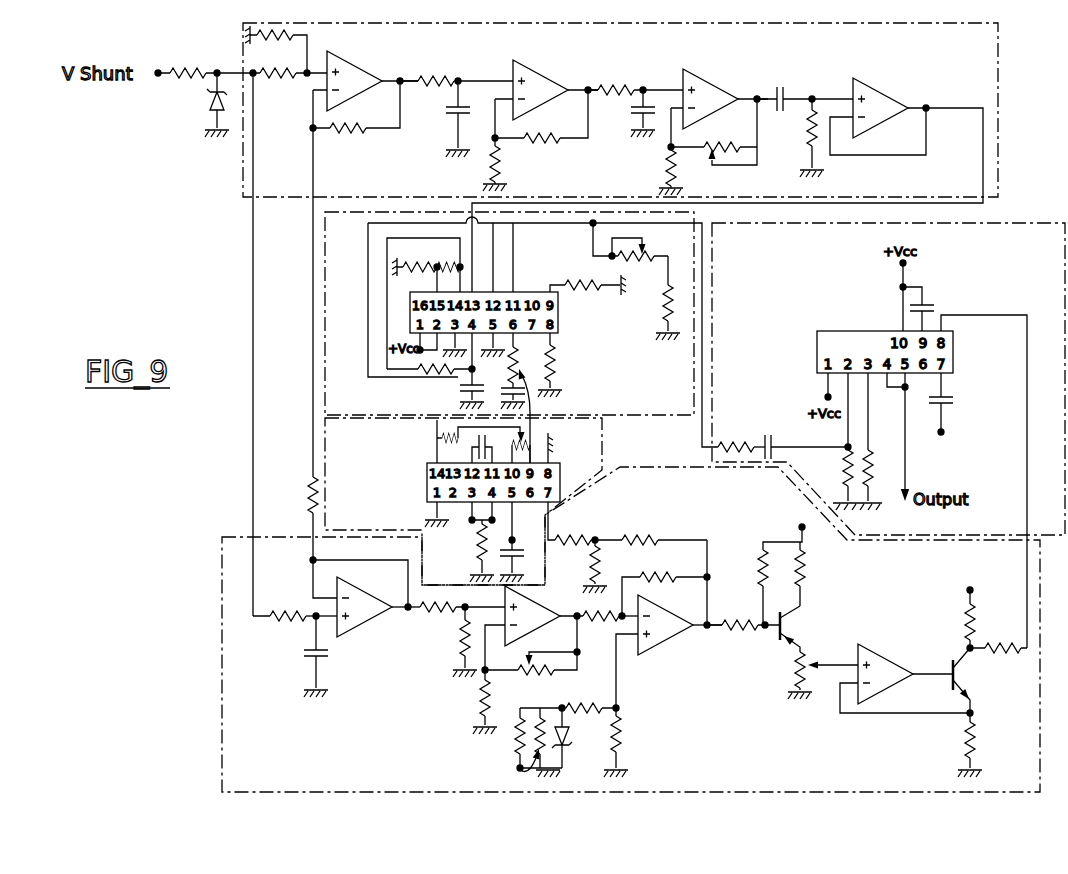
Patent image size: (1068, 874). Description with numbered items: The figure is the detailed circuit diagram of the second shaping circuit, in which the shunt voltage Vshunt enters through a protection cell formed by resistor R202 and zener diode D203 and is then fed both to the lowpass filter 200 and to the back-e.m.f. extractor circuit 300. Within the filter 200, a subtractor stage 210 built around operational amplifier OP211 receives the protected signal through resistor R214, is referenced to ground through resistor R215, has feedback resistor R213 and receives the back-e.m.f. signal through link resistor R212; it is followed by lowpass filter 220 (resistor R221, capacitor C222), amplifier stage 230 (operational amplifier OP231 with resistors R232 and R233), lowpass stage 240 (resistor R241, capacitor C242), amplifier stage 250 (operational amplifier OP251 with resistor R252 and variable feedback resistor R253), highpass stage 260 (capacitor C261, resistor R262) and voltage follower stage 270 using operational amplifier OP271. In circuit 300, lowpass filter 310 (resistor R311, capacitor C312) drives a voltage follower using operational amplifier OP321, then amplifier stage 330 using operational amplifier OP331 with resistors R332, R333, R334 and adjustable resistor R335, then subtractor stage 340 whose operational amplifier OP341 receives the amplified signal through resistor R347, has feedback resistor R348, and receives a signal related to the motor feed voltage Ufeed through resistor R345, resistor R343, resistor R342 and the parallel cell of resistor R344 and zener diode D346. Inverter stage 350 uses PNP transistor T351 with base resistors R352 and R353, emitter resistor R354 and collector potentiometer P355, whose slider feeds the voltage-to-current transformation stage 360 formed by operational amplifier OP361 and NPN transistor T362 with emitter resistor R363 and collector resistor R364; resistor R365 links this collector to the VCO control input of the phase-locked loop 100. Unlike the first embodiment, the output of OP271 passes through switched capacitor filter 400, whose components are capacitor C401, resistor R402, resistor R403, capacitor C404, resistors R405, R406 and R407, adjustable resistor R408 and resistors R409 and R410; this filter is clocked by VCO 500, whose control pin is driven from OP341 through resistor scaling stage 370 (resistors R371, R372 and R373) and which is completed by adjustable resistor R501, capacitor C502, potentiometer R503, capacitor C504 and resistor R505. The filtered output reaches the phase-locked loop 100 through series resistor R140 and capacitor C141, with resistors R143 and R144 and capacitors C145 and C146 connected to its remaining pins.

The phase-locked loop 100 is at (1018, 215).
The lowpass filter 200 is at (1002, 92).
The back-e.m.f. extractor circuit 300 is at (240, 537).
The switched capacitor filter 400 is at (325, 252).
The VCO 500 is at (325, 466).
The subtractor stage 210 is at (376, 54).
The lowpass filter 220 is at (460, 56).
The amplifier stage 230 is at (576, 48).
The lowpass stage 240 is at (654, 55).
The amplifier stage 250 is at (748, 54).
The highpass stage 260 is at (823, 62).
The voltage follower amplifier stage 270 is at (905, 55).
The lowpass filter 310 is at (285, 642).
The amplifier stage 330 is at (410, 668).
The subtractor stage 340 is at (721, 566).
The inverter stage 350 is at (758, 528).
The voltage-to-current transformation stage 360 is at (884, 616).
The resistor scaling stage 370 is at (606, 511).
The resistor R202 is at (182, 58).
The zener diode D203 is at (193, 105).
The resistor R213 is at (355, 121).
The resistor R214 is at (290, 88).
The resistor R215 is at (276, 49).
The operational amplifier OP211 is at (354, 89).
The resistor R221 is at (456, 67).
The capacitor C222 is at (445, 119).
The operational amplifier OP231 is at (550, 89).
The resistor R232 is at (514, 164).
The resistor R233 is at (540, 116).
The resistor R241 is at (635, 76).
The capacitor C242 is at (624, 113).
The operational amplifier OP251 is at (717, 95).
The resistor R252 is at (653, 172).
The variable resistor R253 is at (712, 132).
The capacitor C261 is at (788, 85).
The resistor R262 is at (793, 138).
The operational amplifier OP271 is at (879, 114).
The resistor R402 is at (414, 377).
The capacitor C401 is at (450, 373).
The resistor R403 is at (534, 394).
The capacitor C404 is at (531, 398).
The resistor R405 is at (570, 365).
The resistor R406 is at (593, 297).
The resistor R407 is at (649, 298).
The adjustable resistor R408 is at (640, 240).
The resistor R409 is at (440, 256).
The resistor R410 is at (412, 273).
The capacitor C146 is at (937, 305).
The capacitor C145 is at (961, 418).
The resistor R140 is at (740, 434).
The capacitor C141 is at (806, 436).
The resistor R143 is at (823, 437).
The resistor R144 is at (878, 476).
The resistor R505 is at (436, 423).
The capacitor C504 is at (466, 444).
The potentiometer R503 is at (556, 445).
The adjustable resistor R501 is at (463, 542).
The capacitor C502 is at (526, 563).
The link resistor R212 is at (291, 518).
The resistor R311 is at (303, 602).
The capacitor C312 is at (340, 656).
The operational amplifier OP321 is at (378, 619).
The resistor R332 is at (458, 621).
The resistor R333 is at (444, 642).
The operational amplifier OP331 is at (533, 629).
The resistor R334 is at (463, 702).
The adjustable resistor R335 is at (532, 663).
The resistor R347 is at (610, 604).
The operational amplifier OP341 is at (680, 635).
The resistor R348 is at (666, 583).
The resistor R343 is at (579, 673).
The resistor R342 is at (647, 742).
The resistor R345 is at (496, 739).
The resistor R344 is at (528, 772).
The zener diode D346 is at (585, 738).
The resistor R371 is at (573, 523).
The resistor R372 is at (651, 527).
The resistor R373 is at (614, 566).
The resistor R352 is at (743, 613).
The resistor R353 is at (744, 570).
The resistor R354 is at (823, 568).
The PNP transistor T351 is at (812, 629).
The potentiometer P355 is at (803, 674).
The operational amplifier OP361 is at (905, 676).
The NPN transistor T362 is at (984, 683).
The resistor R363 is at (989, 748).
The resistor R364 is at (949, 610).
The resistor R365 is at (998, 636).